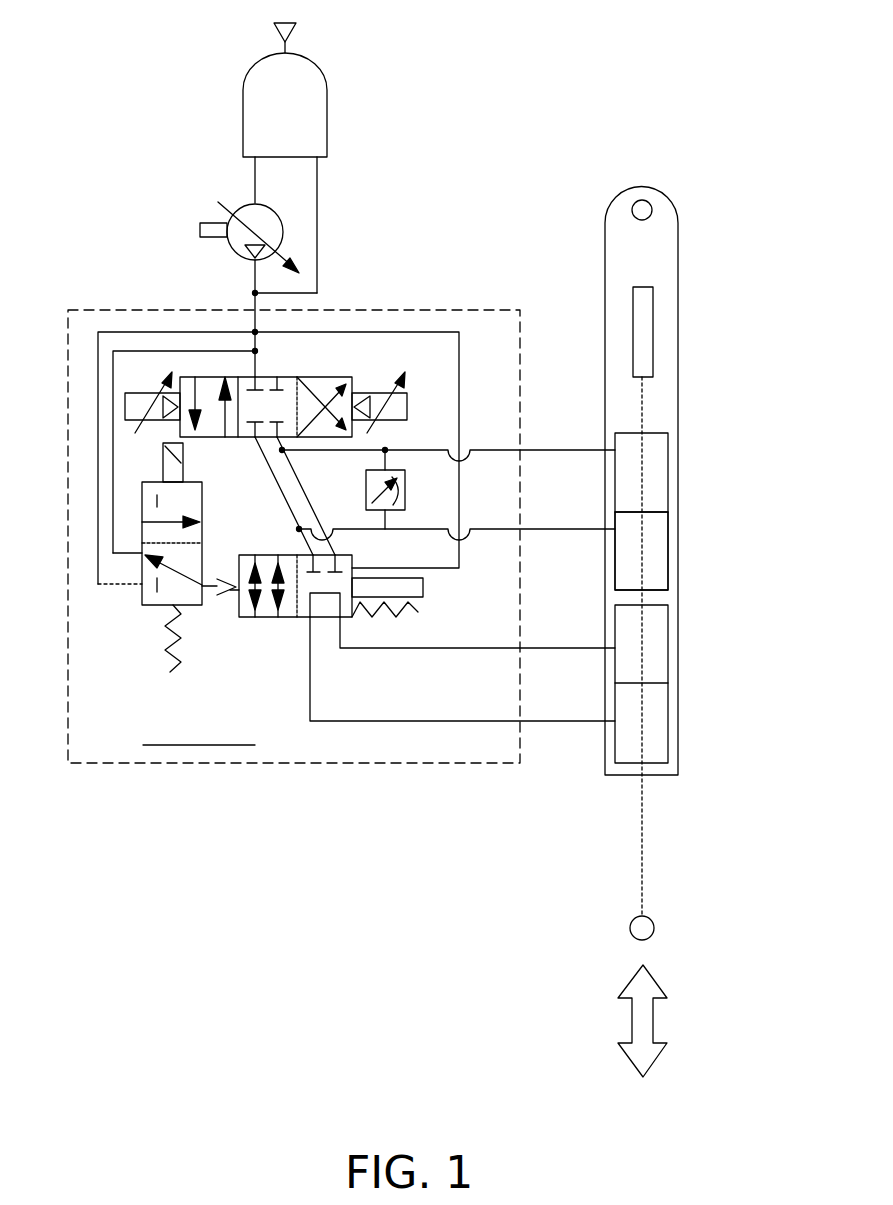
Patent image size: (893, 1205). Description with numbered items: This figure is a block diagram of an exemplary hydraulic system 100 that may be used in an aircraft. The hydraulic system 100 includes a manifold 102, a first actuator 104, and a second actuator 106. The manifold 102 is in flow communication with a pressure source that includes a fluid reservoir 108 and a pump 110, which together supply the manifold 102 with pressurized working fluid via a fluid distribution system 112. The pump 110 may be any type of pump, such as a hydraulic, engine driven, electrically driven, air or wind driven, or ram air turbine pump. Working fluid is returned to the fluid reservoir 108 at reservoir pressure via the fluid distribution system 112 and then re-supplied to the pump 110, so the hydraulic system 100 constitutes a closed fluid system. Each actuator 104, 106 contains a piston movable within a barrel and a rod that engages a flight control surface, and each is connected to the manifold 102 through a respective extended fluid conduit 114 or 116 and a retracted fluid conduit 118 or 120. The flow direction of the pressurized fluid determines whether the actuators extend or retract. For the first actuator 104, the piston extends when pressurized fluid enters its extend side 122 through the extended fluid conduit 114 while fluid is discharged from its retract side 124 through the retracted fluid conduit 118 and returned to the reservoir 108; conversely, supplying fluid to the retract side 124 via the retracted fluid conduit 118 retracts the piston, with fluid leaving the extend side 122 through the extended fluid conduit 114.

The hydraulic system 100 is at (158, 163).
The manifold 102 is at (125, 742).
The first actuator 104 is at (668, 462).
The second actuator 106 is at (668, 651).
The fluid reservoir 108 is at (327, 125).
The pump 110 is at (227, 247).
The fluid distribution system 112 is at (243, 310).
The extended fluid conduit 114 is at (566, 445).
The extended fluid conduit 116 is at (566, 645).
The retracted fluid conduit 118 is at (566, 525).
The retracted fluid conduit 120 is at (566, 723).
The extend side 122 is at (678, 498).
The retract side 124 is at (668, 554).